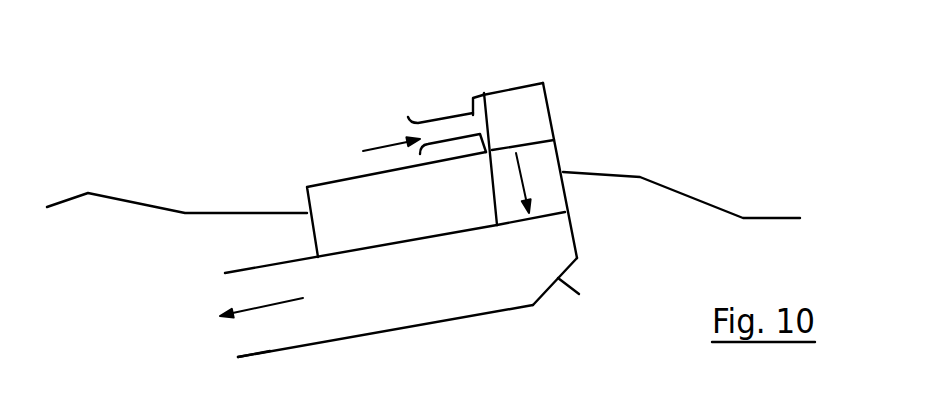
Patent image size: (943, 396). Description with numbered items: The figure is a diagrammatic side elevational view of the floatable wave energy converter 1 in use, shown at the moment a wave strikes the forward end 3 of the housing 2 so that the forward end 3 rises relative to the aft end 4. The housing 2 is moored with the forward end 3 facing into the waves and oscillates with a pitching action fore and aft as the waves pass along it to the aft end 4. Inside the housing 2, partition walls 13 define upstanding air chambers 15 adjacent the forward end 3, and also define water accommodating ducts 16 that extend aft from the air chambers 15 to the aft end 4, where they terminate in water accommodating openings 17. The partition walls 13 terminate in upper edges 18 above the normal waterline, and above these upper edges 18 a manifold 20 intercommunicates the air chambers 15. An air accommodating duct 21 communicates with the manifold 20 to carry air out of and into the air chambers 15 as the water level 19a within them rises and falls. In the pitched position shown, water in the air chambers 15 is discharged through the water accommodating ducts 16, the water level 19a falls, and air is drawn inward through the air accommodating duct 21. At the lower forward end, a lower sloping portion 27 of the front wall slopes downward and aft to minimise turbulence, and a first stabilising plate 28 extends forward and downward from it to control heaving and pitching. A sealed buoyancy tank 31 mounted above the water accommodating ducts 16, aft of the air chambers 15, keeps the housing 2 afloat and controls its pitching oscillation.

The wave energy converter 1 is at (655, 60).
The housing 2 is at (405, 328).
The forward end 3 is at (552, 116).
The aft end 4 is at (226, 273).
The partition walls 13 is at (543, 162).
The air chambers 15 is at (547, 183).
The water accommodating ducts 16 is at (333, 325).
The water accommodating openings 17 is at (247, 340).
The upper edges 18 is at (483, 95).
The water level 19a is at (552, 215).
The manifold 20 is at (528, 95).
The air accommodating duct 21 is at (448, 120).
The lower sloping portion 27 is at (552, 292).
The first stabilising plate 28 is at (568, 292).
The buoyancy tank 31 is at (343, 178).